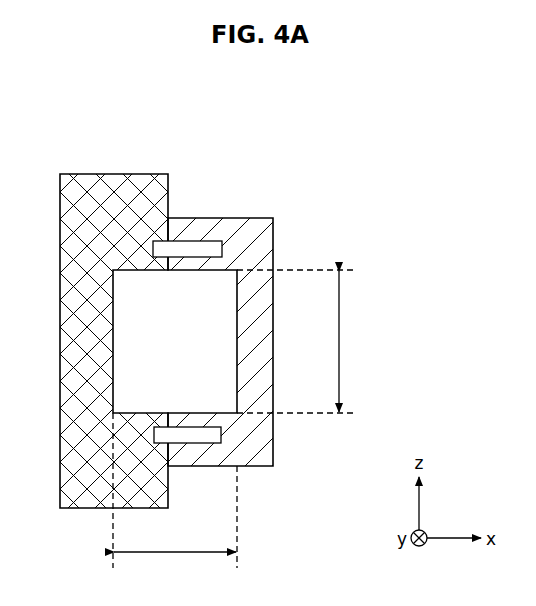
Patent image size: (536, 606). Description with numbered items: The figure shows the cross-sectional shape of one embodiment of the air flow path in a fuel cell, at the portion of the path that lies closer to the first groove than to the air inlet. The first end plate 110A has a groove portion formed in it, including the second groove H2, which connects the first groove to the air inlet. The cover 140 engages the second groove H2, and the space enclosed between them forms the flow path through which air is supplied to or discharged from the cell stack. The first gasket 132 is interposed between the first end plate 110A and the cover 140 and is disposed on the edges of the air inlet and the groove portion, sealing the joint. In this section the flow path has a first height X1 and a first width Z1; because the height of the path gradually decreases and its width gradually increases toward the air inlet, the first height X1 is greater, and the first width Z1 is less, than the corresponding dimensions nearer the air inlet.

The first end plate 110A is at (126, 196).
The first gasket 132 is at (189, 249).
The cover 140 is at (258, 222).
The second groove H2 is at (150, 331).
The first width Z1 is at (303, 341).
The first height X1 is at (175, 496).